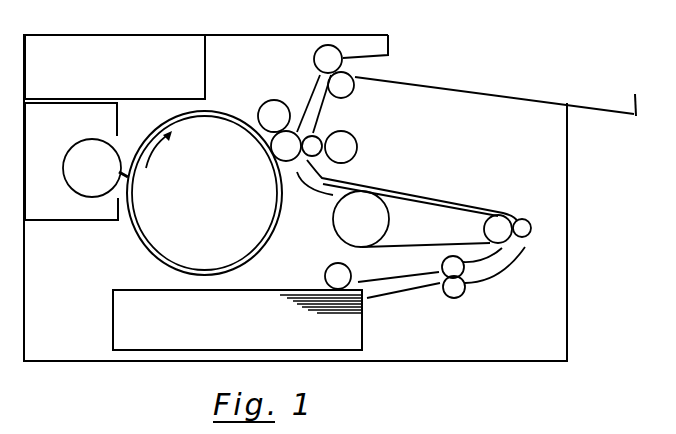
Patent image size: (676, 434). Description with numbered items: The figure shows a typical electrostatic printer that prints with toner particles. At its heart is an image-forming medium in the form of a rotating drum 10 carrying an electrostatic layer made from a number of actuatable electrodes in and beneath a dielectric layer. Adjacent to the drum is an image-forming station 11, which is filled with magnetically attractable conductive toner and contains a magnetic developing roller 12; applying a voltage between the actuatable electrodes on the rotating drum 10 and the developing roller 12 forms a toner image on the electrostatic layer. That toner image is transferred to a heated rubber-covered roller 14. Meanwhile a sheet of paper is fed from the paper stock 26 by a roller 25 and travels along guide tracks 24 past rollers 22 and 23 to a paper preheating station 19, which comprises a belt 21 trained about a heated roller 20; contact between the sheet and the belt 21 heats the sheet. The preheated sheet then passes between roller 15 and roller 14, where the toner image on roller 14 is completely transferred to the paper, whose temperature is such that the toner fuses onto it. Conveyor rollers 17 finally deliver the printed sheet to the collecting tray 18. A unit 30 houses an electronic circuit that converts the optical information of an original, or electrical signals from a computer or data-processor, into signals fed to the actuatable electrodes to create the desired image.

The rotating drum 10 is at (212, 150).
The image-forming station 11 is at (60, 131).
The magnetic developing roller 12 is at (73, 166).
The heated rubber-covered roller 14 is at (283, 151).
The roller 15 is at (313, 136).
The conveyor rollers 17 is at (347, 80).
The collecting tray 18 is at (512, 90).
The paper preheating station 19 is at (433, 203).
The heated roller 20 is at (347, 219).
The belt 21 is at (457, 201).
The rollers 22 is at (464, 286).
The rollers 23 is at (529, 221).
The guide tracks 24 is at (409, 191).
The roller 25 is at (328, 268).
The paper stock 26 is at (255, 338).
The unit 30 is at (128, 77).